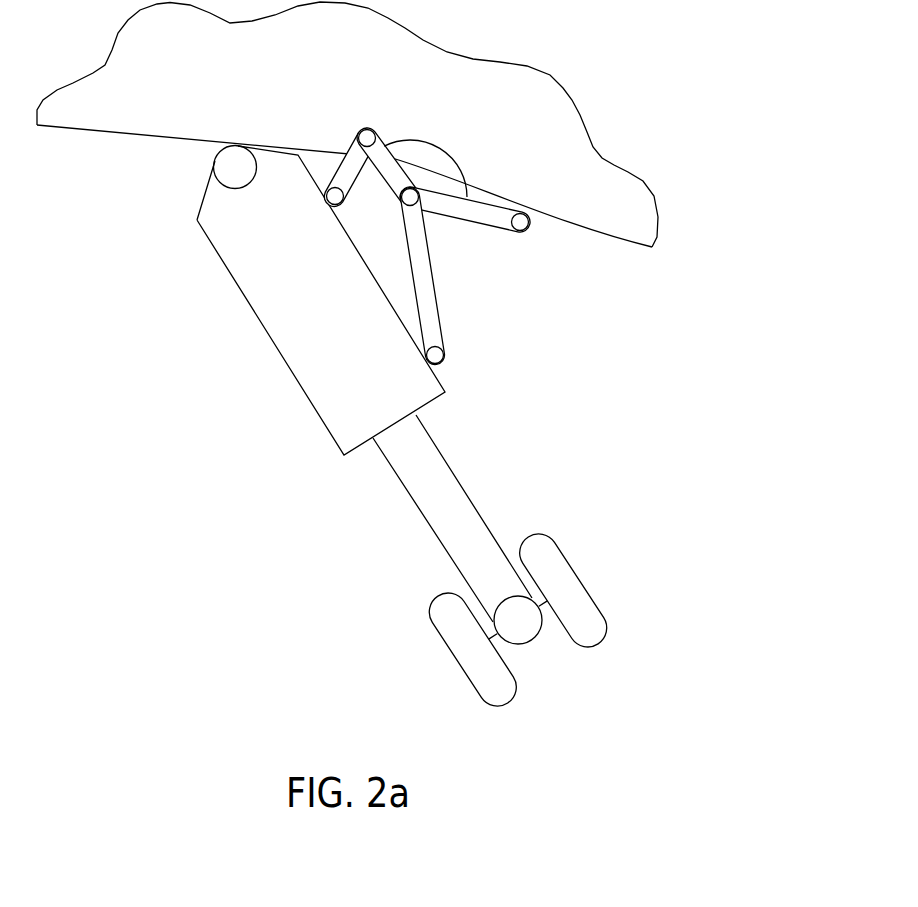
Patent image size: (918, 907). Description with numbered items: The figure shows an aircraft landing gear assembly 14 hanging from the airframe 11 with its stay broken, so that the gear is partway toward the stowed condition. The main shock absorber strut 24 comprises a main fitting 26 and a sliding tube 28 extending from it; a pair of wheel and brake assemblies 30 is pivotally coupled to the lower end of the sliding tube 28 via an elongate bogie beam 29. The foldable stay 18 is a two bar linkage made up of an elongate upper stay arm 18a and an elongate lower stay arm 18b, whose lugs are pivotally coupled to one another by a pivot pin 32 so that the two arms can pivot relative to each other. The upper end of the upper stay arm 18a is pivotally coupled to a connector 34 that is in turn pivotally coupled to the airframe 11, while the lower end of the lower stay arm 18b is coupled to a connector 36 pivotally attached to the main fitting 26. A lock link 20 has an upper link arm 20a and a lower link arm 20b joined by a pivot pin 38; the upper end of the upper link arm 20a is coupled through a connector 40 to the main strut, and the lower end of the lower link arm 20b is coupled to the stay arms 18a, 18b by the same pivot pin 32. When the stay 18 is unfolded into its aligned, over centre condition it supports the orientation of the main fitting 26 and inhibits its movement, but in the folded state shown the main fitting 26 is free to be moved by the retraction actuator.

The airframe 11 is at (102, 127).
The aircraft landing gear assembly 14 is at (362, 392).
The foldable stay 18 is at (490, 269).
The upper stay arm 18a is at (496, 208).
The lower stay arm 18b is at (436, 304).
The lock link 20 is at (273, 197).
The upper link arm 20a is at (247, 182).
The lower link arm 20b is at (378, 152).
The main shock absorber strut 24 is at (364, 384).
The main fitting 26 is at (323, 411).
The sliding tube 28 is at (412, 500).
The bogie beam 29 is at (528, 643).
The wheel and brake assemblies 30 is at (476, 620).
The pivot pin 32 is at (412, 207).
The connector 34 is at (528, 226).
The connector 36 is at (441, 360).
The pivot pin 38 is at (366, 129).
The connector 40 is at (327, 197).